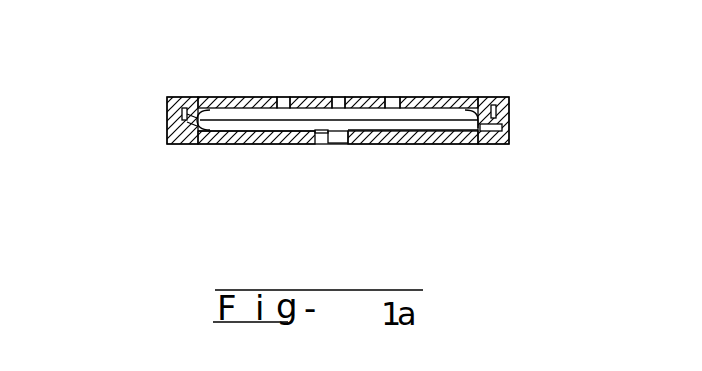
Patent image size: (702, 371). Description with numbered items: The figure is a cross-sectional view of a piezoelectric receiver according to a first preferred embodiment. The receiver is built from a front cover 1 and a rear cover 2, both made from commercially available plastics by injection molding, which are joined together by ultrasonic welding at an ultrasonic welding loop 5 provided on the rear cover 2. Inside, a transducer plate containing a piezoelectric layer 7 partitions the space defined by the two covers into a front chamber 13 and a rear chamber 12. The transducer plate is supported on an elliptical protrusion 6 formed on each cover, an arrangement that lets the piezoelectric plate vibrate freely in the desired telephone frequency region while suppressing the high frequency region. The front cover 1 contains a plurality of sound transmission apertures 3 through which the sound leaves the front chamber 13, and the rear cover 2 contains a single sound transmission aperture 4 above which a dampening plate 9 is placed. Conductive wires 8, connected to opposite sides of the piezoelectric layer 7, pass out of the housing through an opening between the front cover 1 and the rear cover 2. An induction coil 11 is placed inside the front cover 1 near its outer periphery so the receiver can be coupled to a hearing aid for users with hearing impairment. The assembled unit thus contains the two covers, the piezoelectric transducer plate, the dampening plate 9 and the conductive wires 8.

The front cover 1 is at (493, 97).
The rear cover 2 is at (200, 145).
The sound transmission apertures 3 is at (283, 97).
The sound transmission aperture 4 is at (340, 143).
The ultrasonic welding loop 5 is at (160, 132).
The elliptical protrusion 6 is at (173, 97).
The piezoelectric layer 7 is at (385, 120).
The conductive wires 8 is at (478, 130).
The dampening plate 9 is at (322, 143).
The induction coil 11 is at (509, 105).
The rear chamber 12 is at (258, 128).
The front chamber 13 is at (240, 97).